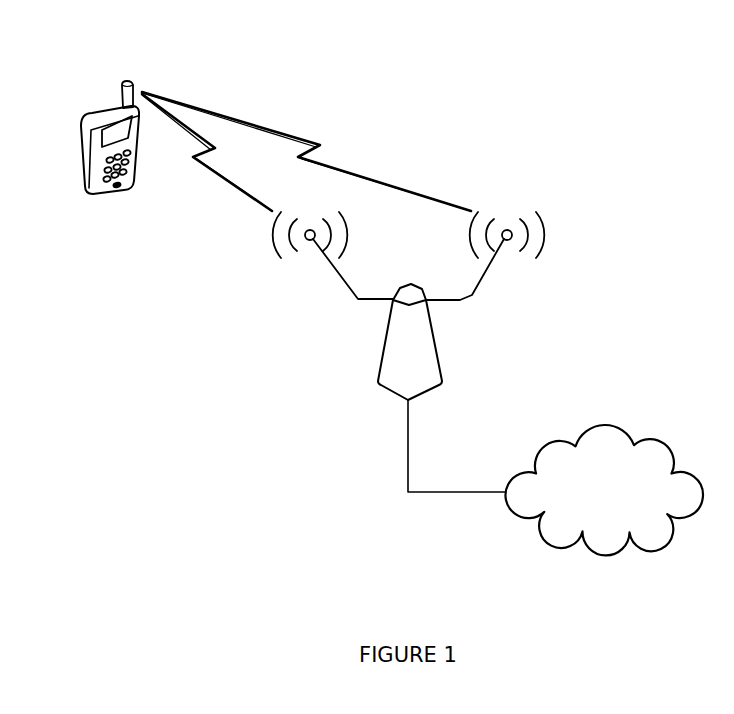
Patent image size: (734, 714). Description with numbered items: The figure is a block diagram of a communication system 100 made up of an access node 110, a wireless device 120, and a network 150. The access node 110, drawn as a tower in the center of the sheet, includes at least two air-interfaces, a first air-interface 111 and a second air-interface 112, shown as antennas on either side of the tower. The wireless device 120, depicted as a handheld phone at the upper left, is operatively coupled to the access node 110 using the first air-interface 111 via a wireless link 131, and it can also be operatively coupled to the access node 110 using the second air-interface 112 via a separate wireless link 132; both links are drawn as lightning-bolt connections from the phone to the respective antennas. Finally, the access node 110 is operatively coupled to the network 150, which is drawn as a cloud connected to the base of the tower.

The communication system 100 is at (604, 68).
The access node 110 is at (389, 392).
The air-interface 111 is at (342, 284).
The air-interface 112 is at (471, 288).
The wireless device 120 is at (98, 196).
The wireless link 131 is at (232, 184).
The wireless link 132 is at (304, 140).
The network 150 is at (588, 514).